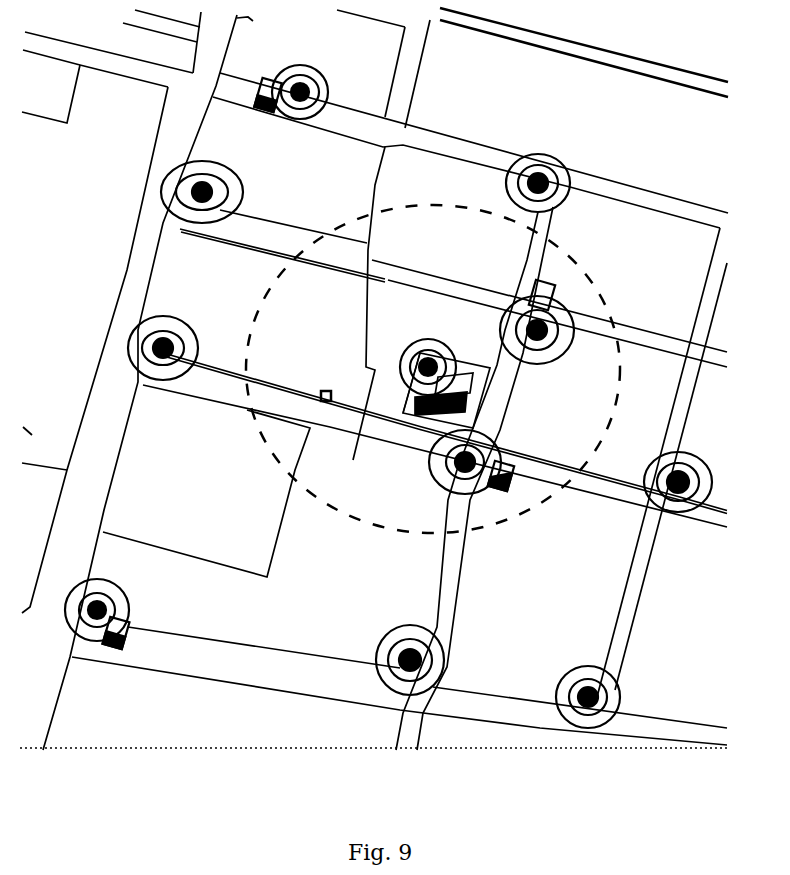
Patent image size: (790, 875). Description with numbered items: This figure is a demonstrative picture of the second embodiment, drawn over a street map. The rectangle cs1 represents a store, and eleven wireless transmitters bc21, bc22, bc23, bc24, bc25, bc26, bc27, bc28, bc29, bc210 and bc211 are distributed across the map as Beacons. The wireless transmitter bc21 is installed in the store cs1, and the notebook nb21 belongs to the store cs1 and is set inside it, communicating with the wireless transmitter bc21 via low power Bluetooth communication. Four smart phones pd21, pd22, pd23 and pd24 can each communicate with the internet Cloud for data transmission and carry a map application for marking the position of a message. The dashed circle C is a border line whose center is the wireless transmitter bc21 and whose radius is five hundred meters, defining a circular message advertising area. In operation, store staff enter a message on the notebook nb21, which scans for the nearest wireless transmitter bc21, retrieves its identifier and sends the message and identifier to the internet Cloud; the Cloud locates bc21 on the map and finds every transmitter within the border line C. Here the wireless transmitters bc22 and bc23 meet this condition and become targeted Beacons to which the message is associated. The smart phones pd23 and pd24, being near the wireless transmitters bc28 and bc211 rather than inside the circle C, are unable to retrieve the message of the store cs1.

The wireless transmitter bc21 is at (416, 340).
The wireless transmitter bc22 is at (548, 360).
The wireless transmitter bc23 is at (432, 476).
The wireless transmitter bc24 is at (570, 170).
The wireless transmitter bc25 is at (682, 507).
The wireless transmitter bc26 is at (622, 692).
The wireless transmitter bc27 is at (377, 647).
The wireless transmitter bc28 is at (117, 600).
The wireless transmitter bc29 is at (137, 332).
The wireless transmitter bc210 is at (168, 175).
The wireless transmitter bc211 is at (316, 74).
The smart phone pd21 is at (560, 290).
The smart phone pd22 is at (515, 492).
The smart phone pd23 is at (130, 636).
The smart phone pd24 is at (267, 80).
The notebook nb21 is at (492, 408).
The store cs1 is at (398, 415).
The border line C is at (263, 440).